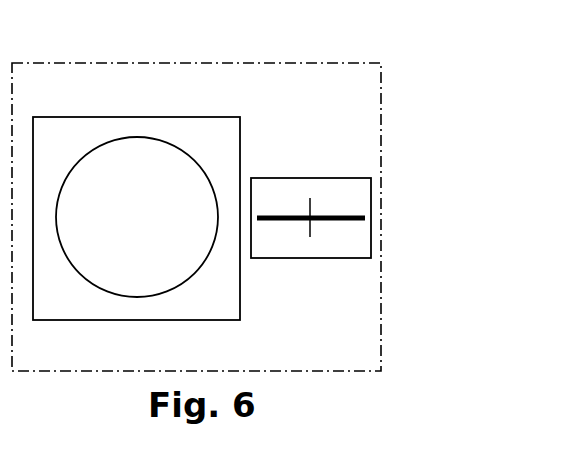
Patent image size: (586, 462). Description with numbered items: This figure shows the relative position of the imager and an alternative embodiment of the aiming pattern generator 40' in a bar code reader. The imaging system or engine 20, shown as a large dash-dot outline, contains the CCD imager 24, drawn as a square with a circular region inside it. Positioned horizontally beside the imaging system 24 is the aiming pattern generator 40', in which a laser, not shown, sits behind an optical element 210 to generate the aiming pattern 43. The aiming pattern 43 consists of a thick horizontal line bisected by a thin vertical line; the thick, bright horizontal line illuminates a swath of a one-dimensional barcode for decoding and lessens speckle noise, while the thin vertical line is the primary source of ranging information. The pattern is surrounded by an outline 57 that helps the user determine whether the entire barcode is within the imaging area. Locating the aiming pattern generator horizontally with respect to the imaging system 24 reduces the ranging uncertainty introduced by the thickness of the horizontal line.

The imaging system or engine 20 is at (98, 63).
The CCD imager 24 is at (162, 117).
The outline 57 is at (295, 178).
The aiming pattern 43 is at (288, 222).
The optical element 210 is at (355, 258).
The aiming pattern generator 40' is at (231, 217).